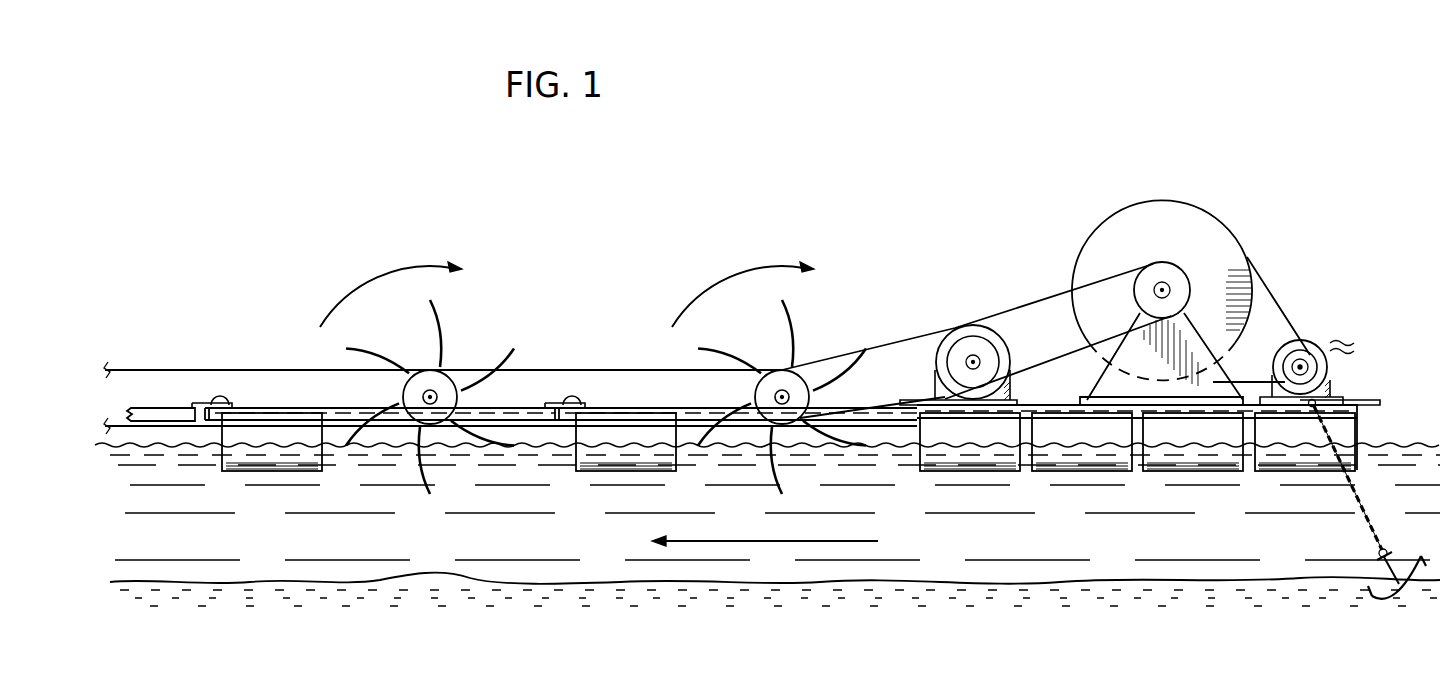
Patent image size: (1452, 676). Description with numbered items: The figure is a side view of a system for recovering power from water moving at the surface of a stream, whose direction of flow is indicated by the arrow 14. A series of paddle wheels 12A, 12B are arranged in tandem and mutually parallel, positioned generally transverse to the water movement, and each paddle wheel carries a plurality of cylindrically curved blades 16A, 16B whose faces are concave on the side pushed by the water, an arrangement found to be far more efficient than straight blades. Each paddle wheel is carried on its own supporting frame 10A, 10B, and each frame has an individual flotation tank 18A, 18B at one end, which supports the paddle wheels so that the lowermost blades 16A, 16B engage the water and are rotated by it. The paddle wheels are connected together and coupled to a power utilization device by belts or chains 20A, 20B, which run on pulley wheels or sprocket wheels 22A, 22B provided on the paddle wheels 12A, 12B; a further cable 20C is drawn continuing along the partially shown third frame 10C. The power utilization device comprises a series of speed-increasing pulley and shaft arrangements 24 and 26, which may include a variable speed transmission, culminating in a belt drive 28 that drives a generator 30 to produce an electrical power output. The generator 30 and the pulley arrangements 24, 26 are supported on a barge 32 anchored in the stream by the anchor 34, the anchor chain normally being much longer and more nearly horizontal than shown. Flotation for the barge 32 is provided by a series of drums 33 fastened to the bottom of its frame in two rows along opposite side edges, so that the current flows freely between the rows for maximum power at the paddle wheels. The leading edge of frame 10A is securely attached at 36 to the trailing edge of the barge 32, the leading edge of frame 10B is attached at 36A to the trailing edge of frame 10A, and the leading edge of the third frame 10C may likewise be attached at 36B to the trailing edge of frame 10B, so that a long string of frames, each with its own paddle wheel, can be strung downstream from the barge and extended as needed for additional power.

The supporting frame 10A is at (676, 407).
The supporting frame 10B is at (318, 407).
The third frame 10C is at (170, 406).
The paddle wheel 12A is at (772, 336).
The paddle wheel 12B is at (420, 336).
The arrow 14 is at (822, 541).
The cylindrically curved blades 16A is at (793, 318).
The cylindrically curved blades 16B is at (437, 318).
The flotation tank 18A is at (631, 472).
The flotation tank 18B is at (283, 472).
The belt or chain 20A is at (898, 342).
The belt or chain 20B is at (568, 369).
The cable 20C is at (183, 368).
The pulley wheel or sprocket wheel 22A is at (768, 370).
The pulley wheel or sprocket wheel 22B is at (418, 370).
The speed-increasing pulley and shaft arrangement 24 is at (960, 315).
The speed-increasing pulley and shaft arrangement 26 is at (1228, 212).
The belt drive 28 is at (1283, 300).
The generator 30 is at (1305, 340).
The barge 32 is at (1350, 402).
The drums 33 is at (1063, 471).
The anchor 34 is at (1402, 562).
The attachment 36 is at (928, 397).
The attachment 36A is at (578, 398).
The attachment 36B is at (225, 398).